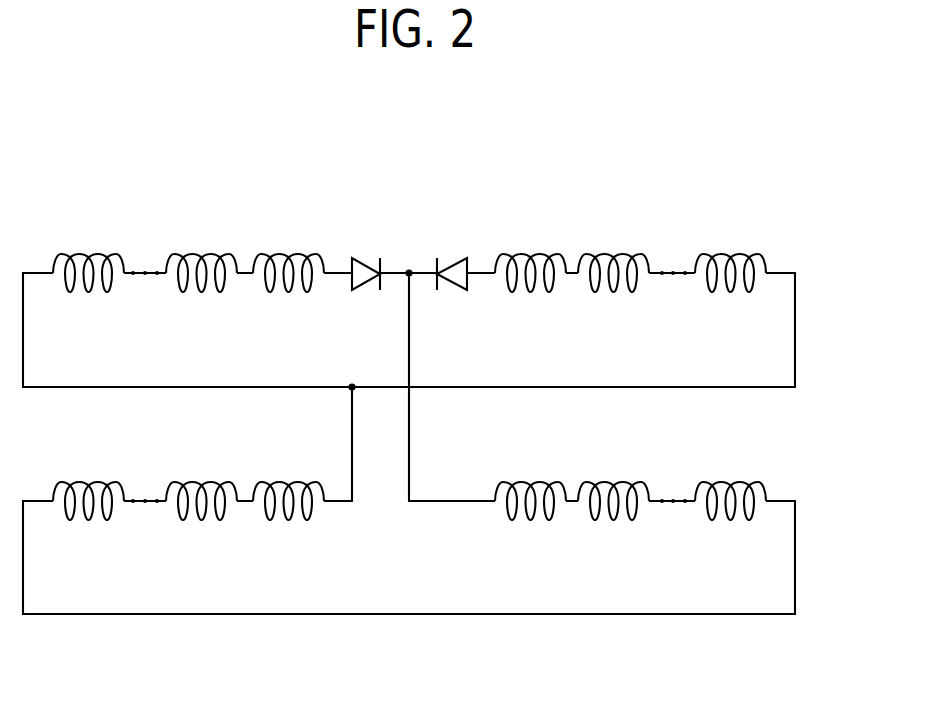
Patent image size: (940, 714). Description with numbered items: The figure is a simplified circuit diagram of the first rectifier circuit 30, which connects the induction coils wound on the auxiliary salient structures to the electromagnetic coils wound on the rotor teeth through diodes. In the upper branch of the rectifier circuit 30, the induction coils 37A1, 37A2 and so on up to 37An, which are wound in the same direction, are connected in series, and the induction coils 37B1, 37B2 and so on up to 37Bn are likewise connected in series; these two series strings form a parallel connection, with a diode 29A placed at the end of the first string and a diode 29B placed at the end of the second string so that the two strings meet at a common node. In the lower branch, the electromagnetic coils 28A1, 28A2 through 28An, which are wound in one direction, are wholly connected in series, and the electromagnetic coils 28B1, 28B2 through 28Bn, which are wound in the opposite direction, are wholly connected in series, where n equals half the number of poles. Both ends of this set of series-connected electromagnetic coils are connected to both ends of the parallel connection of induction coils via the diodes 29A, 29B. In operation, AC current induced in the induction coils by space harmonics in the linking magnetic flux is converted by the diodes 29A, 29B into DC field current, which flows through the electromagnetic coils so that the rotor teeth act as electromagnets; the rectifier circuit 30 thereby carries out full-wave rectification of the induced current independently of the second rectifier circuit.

The induction coil 37An is at (89, 253).
The induction coil 37A2 is at (202, 253).
The induction coil 37A1 is at (289, 253).
The diode 29A is at (372, 257).
The diode 29B is at (450, 258).
The induction coil 37B1 is at (531, 253).
The induction coil 37B2 is at (614, 253).
The induction coil 37Bn is at (731, 253).
The electromagnetic coil 28An is at (89, 481).
The electromagnetic coil 28A2 is at (202, 481).
The electromagnetic coil 28A1 is at (289, 481).
The electromagnetic coil 28B1 is at (531, 481).
The electromagnetic coil 28B2 is at (614, 481).
The electromagnetic coil 28Bn is at (731, 481).
The first rectifier circuit 30 is at (857, 416).